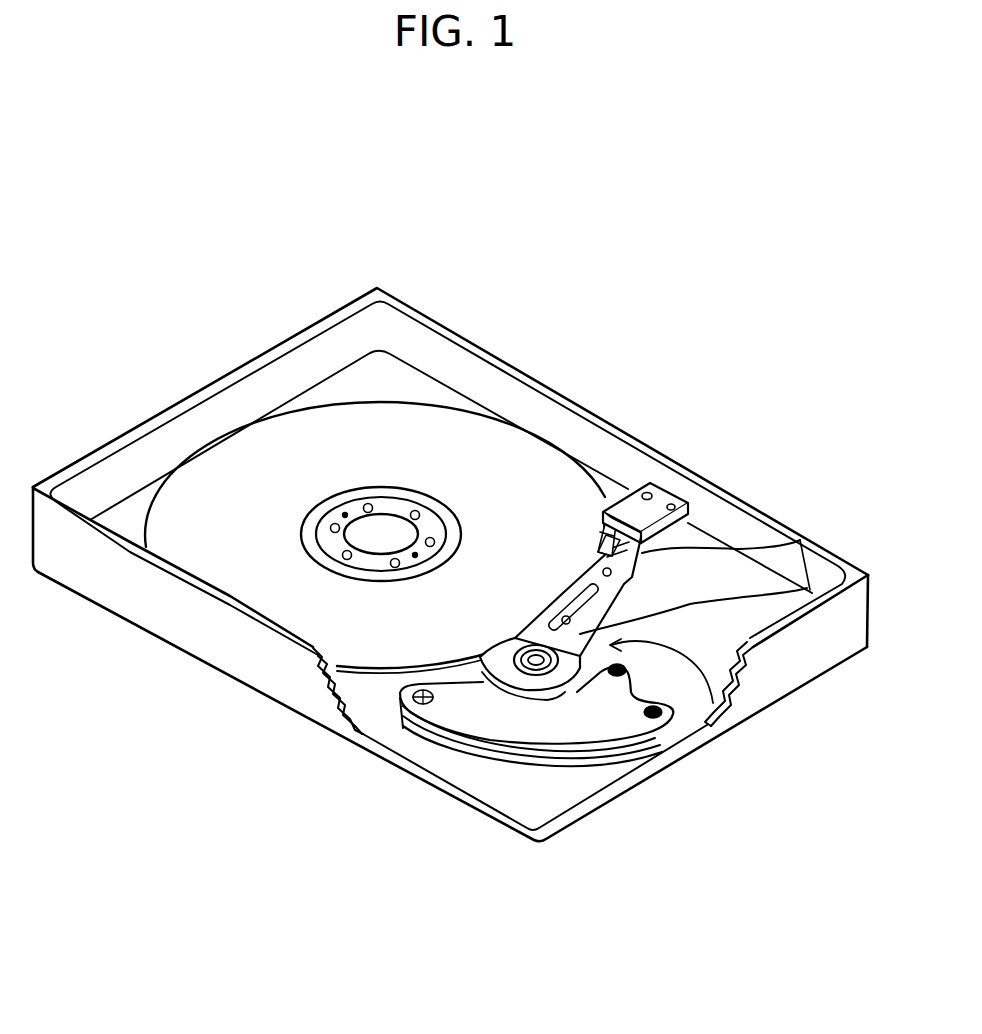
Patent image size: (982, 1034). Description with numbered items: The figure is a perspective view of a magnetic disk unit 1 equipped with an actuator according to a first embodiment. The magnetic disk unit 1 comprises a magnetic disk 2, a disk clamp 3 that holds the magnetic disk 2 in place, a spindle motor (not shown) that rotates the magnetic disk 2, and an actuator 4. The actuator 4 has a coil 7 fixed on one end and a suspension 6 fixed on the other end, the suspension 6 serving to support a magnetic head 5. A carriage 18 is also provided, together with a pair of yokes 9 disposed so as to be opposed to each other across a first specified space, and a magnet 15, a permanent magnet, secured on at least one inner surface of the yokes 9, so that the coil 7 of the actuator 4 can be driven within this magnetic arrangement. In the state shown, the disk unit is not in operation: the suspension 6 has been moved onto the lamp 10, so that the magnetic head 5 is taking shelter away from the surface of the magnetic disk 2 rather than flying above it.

The magnetic disk unit 1 is at (404, 273).
The magnetic disk 2 is at (457, 423).
The disk clamp 3 is at (323, 513).
The actuator 4 is at (735, 728).
The magnetic head 5 is at (690, 525).
The suspension 6 is at (800, 540).
The coil 7 is at (421, 733).
The yokes 9 is at (590, 725).
The lamp (ramp) 10 is at (628, 497).
The magnet (permanent magnet) 15 is at (560, 768).
The carriage 18 is at (812, 593).